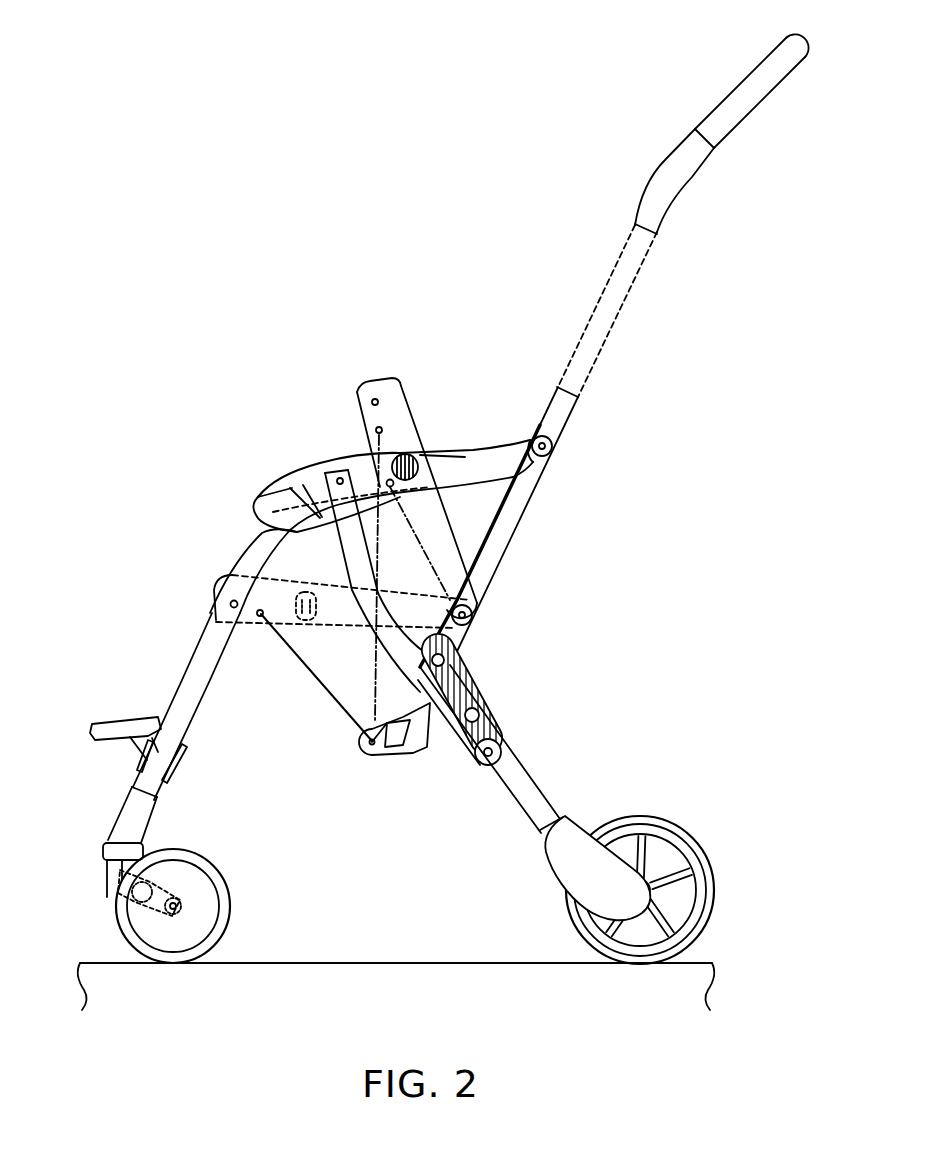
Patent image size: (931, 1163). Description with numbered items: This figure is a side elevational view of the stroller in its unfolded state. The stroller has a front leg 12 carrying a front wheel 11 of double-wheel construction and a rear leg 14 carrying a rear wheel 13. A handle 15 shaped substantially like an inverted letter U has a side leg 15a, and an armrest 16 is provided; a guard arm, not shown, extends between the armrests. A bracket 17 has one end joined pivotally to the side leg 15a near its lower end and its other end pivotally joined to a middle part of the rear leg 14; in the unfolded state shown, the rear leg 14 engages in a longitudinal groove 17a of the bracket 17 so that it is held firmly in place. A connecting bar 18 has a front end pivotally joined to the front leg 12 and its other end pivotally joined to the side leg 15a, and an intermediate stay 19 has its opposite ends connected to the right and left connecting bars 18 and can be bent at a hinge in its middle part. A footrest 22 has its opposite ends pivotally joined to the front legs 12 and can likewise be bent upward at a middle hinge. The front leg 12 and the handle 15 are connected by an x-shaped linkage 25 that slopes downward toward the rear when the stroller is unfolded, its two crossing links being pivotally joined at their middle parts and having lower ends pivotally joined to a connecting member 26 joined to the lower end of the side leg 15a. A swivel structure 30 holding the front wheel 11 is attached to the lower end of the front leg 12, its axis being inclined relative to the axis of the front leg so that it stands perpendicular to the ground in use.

The front wheel 11 is at (233, 899).
The front leg 12 is at (190, 700).
The rear wheel 13 is at (689, 818).
The rear leg 14 is at (517, 781).
The handle 15 is at (640, 200).
The side leg 15a is at (552, 444).
The armrest 16 is at (455, 458).
The bracket 17 is at (470, 687).
The longitudinal groove 17a is at (480, 722).
The connecting bar 18 is at (280, 588).
The intermediate stay 19 is at (316, 615).
The footrest 22 is at (134, 727).
The x-shaped linkage 25 is at (320, 686).
The connecting member 26 is at (385, 760).
The swivel structure 30 is at (130, 828).